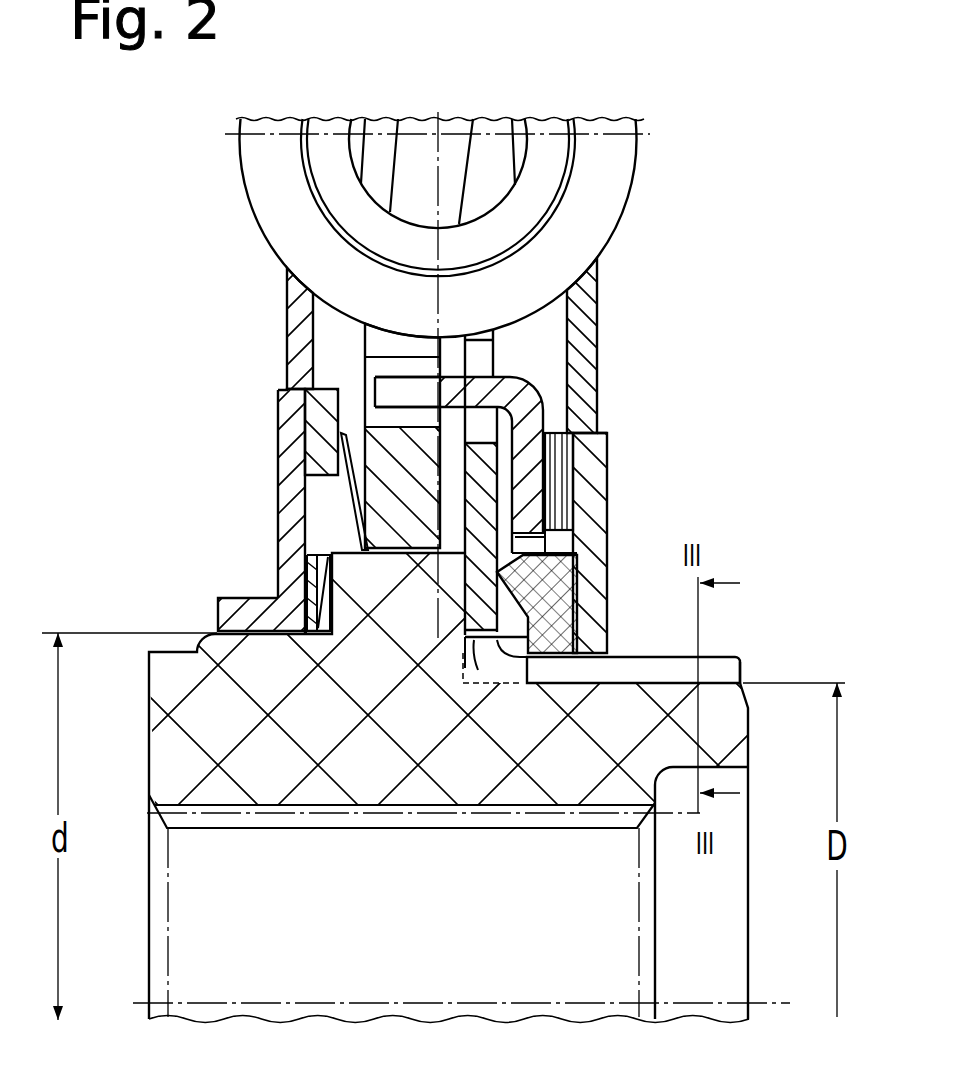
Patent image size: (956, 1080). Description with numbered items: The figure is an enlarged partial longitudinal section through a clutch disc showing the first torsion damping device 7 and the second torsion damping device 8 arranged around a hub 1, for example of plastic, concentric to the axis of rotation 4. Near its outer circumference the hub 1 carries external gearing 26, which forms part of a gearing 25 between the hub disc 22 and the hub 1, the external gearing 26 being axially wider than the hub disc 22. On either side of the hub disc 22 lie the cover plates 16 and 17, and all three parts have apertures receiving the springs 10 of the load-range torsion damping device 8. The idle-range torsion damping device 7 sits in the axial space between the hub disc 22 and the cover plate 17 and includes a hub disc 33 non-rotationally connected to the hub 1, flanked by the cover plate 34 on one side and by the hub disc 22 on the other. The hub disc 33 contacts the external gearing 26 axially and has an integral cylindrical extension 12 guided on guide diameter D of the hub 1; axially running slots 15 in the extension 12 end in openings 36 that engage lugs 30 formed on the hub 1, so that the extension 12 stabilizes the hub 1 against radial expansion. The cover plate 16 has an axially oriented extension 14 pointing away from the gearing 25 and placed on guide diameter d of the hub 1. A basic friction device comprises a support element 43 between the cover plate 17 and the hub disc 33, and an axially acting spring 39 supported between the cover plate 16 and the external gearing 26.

The hub 1 is at (172, 743).
The axis of rotation 4 is at (324, 1003).
The first torsion damping device 7 is at (652, 437).
The second torsion damping device 8 is at (655, 152).
The springs 10 is at (325, 158).
The cylindrical extension 12 is at (720, 648).
The axially-oriented extension 14 is at (228, 607).
The slots 15 is at (752, 672).
The cover plate 16 is at (300, 312).
The cover plate 17 is at (582, 309).
The hub disc 22 is at (420, 152).
The gearing 25 is at (347, 532).
The external gearing 26 is at (438, 543).
The lugs 30 is at (578, 610).
The hub disc 33 is at (485, 462).
The cover plate 34 is at (523, 403).
The openings 36 is at (475, 640).
The axially acting spring 39 is at (307, 572).
The support element 43 is at (512, 588).